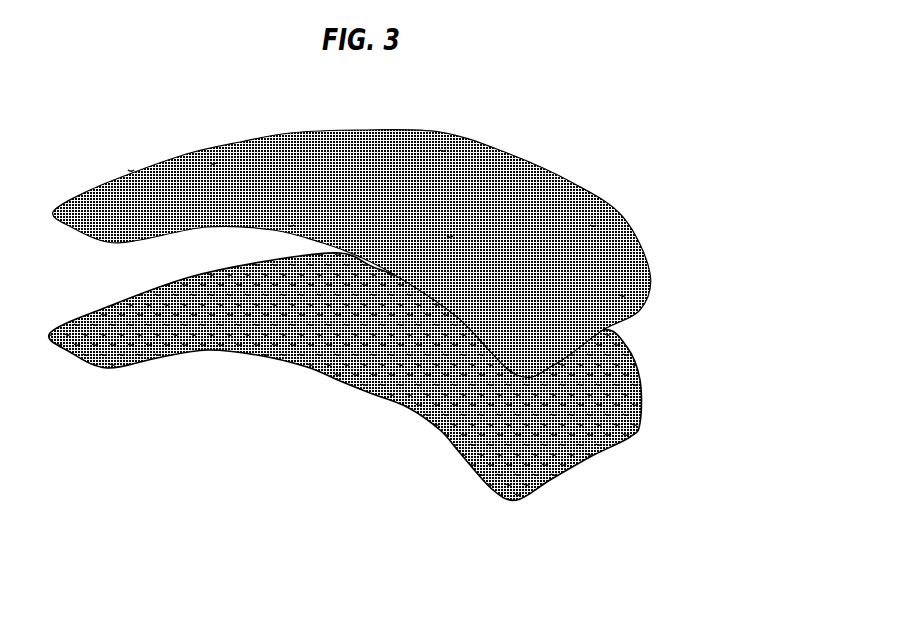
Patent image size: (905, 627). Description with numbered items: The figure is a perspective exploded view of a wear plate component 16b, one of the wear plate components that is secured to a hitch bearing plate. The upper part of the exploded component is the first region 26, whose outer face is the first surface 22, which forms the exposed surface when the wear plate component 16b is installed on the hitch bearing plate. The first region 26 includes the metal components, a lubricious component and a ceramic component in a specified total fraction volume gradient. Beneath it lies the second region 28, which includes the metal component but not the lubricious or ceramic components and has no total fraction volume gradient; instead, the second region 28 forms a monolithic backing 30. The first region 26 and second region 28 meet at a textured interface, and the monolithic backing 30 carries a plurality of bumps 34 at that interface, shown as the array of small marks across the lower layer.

The wear plate component 16b is at (405, 294).
The first surface 22 is at (454, 160).
The first region 26 is at (409, 231).
The second region 28 is at (405, 377).
The monolithic backing 30 is at (298, 368).
The bumps 34 is at (382, 373).